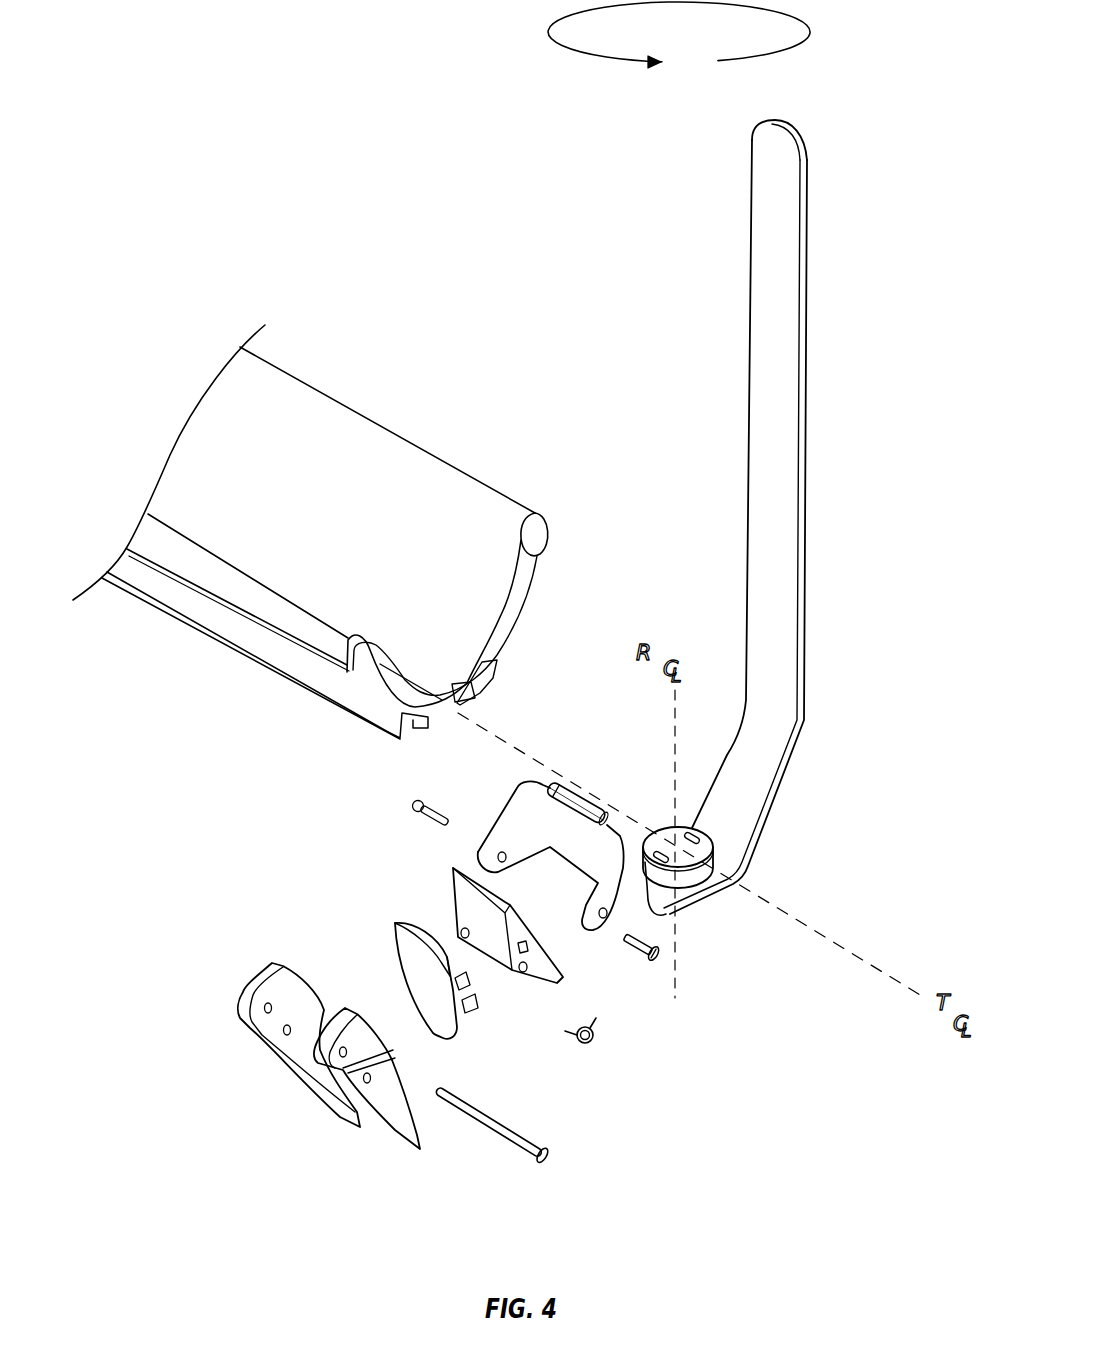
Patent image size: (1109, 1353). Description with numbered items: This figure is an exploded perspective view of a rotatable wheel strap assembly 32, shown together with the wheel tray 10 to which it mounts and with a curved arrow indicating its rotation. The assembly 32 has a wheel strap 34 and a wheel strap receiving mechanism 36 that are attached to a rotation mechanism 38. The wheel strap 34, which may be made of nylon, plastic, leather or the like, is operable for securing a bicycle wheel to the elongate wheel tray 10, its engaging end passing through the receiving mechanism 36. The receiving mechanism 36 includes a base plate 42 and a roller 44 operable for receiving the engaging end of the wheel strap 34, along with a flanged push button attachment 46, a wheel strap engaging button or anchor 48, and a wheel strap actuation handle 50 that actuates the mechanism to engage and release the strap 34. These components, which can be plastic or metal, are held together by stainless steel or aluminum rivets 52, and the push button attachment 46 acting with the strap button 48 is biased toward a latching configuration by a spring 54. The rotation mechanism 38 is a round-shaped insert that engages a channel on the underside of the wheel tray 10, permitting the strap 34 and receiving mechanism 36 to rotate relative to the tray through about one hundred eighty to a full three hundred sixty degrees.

The dock bumper assembly 10 is at (512, 480).
The rotatable wheel strap assembly 32 is at (616, 517).
The wheel strap 34 is at (770, 228).
The wheel strap receiving mechanism 36 is at (495, 784).
The rotation mechanism 38 is at (724, 855).
The base plate 42 is at (624, 822).
The roller 44 is at (568, 786).
The flanged push button attachment 46 is at (450, 873).
The wheel strap engaging button 48 is at (392, 947).
The wheel strap actuation handle 50 is at (280, 1053).
The rivets 52 is at (628, 950).
The spring 54 is at (598, 1040).